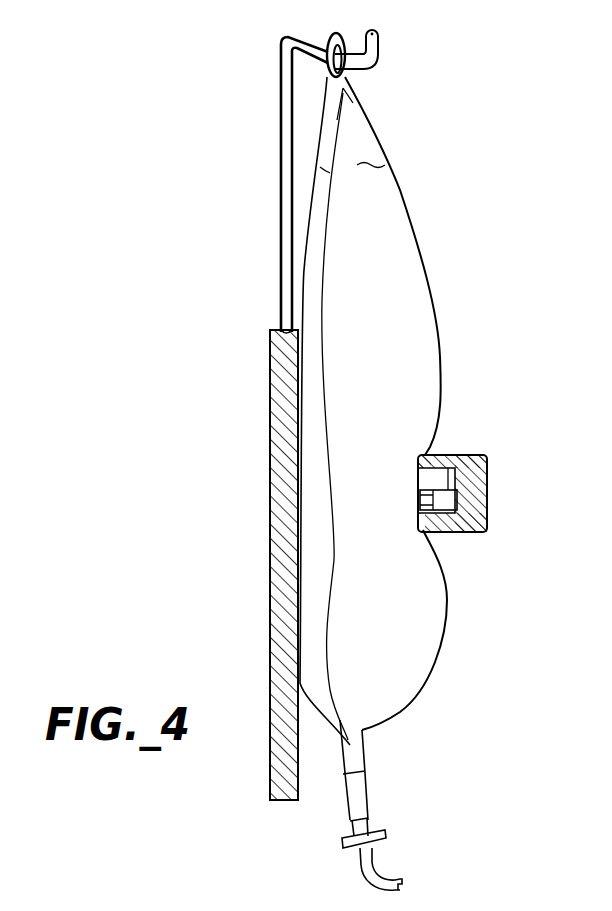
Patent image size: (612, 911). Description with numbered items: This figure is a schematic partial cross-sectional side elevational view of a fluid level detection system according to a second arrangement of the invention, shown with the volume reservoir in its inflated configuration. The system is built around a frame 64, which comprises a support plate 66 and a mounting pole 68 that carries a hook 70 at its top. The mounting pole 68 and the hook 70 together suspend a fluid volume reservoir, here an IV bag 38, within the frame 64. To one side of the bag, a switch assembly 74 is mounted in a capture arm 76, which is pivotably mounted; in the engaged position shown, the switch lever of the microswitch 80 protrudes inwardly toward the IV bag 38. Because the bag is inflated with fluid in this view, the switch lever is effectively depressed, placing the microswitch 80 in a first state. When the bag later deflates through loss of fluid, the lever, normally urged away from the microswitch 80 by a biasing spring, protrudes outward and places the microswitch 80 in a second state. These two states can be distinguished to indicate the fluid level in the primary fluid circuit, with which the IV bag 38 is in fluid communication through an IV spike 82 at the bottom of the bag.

The frame 64 is at (142, 221).
The support plate 66 is at (268, 470).
The mounting pole 68 is at (280, 93).
The hook 70 is at (380, 48).
The IV bag 38 is at (424, 241).
The switch assembly 74 is at (450, 467).
The capture arm 76 is at (490, 464).
The microswitch 80 is at (447, 505).
The IV spike 82 is at (377, 851).